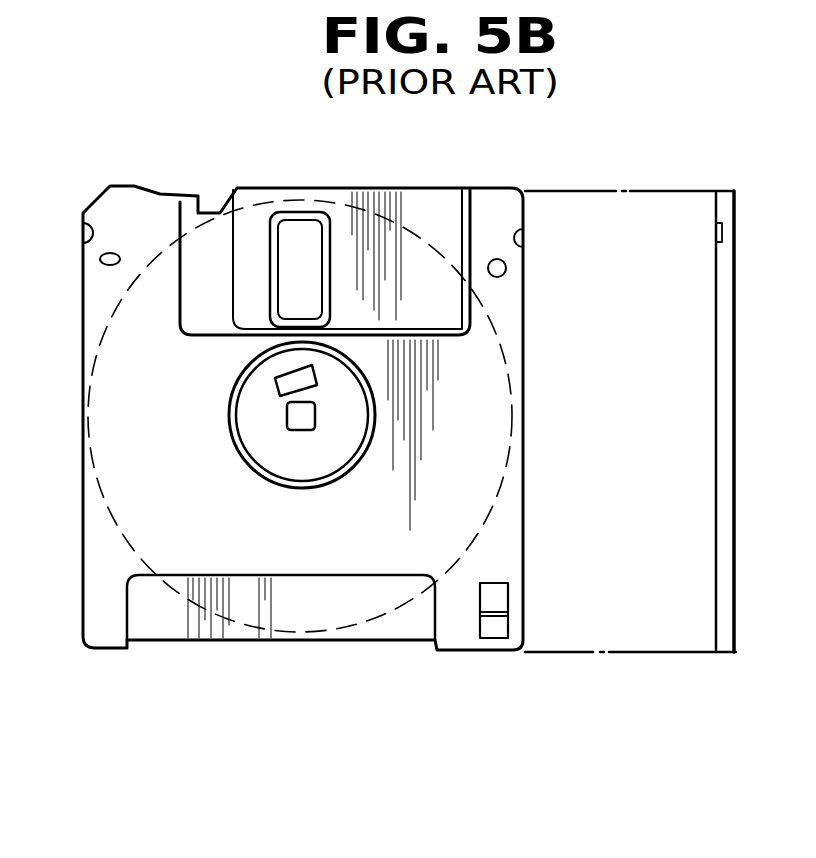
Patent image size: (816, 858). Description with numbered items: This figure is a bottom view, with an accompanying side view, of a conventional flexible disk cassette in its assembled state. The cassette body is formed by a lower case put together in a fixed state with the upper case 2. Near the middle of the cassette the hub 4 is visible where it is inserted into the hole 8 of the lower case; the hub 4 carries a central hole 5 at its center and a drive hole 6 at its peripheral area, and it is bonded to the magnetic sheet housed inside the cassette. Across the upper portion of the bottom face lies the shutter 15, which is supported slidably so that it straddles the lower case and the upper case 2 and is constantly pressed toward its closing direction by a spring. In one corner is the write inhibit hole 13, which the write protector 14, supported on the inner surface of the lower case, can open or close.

The upper case 2 is at (83, 578).
The hub 4 is at (342, 435).
The central hole 5 is at (288, 430).
The drive hole 6 is at (280, 395).
The hole 8 is at (332, 482).
The write inhibit hole 13 is at (497, 640).
The write protector 14 is at (505, 598).
The shutter 15 is at (428, 188).